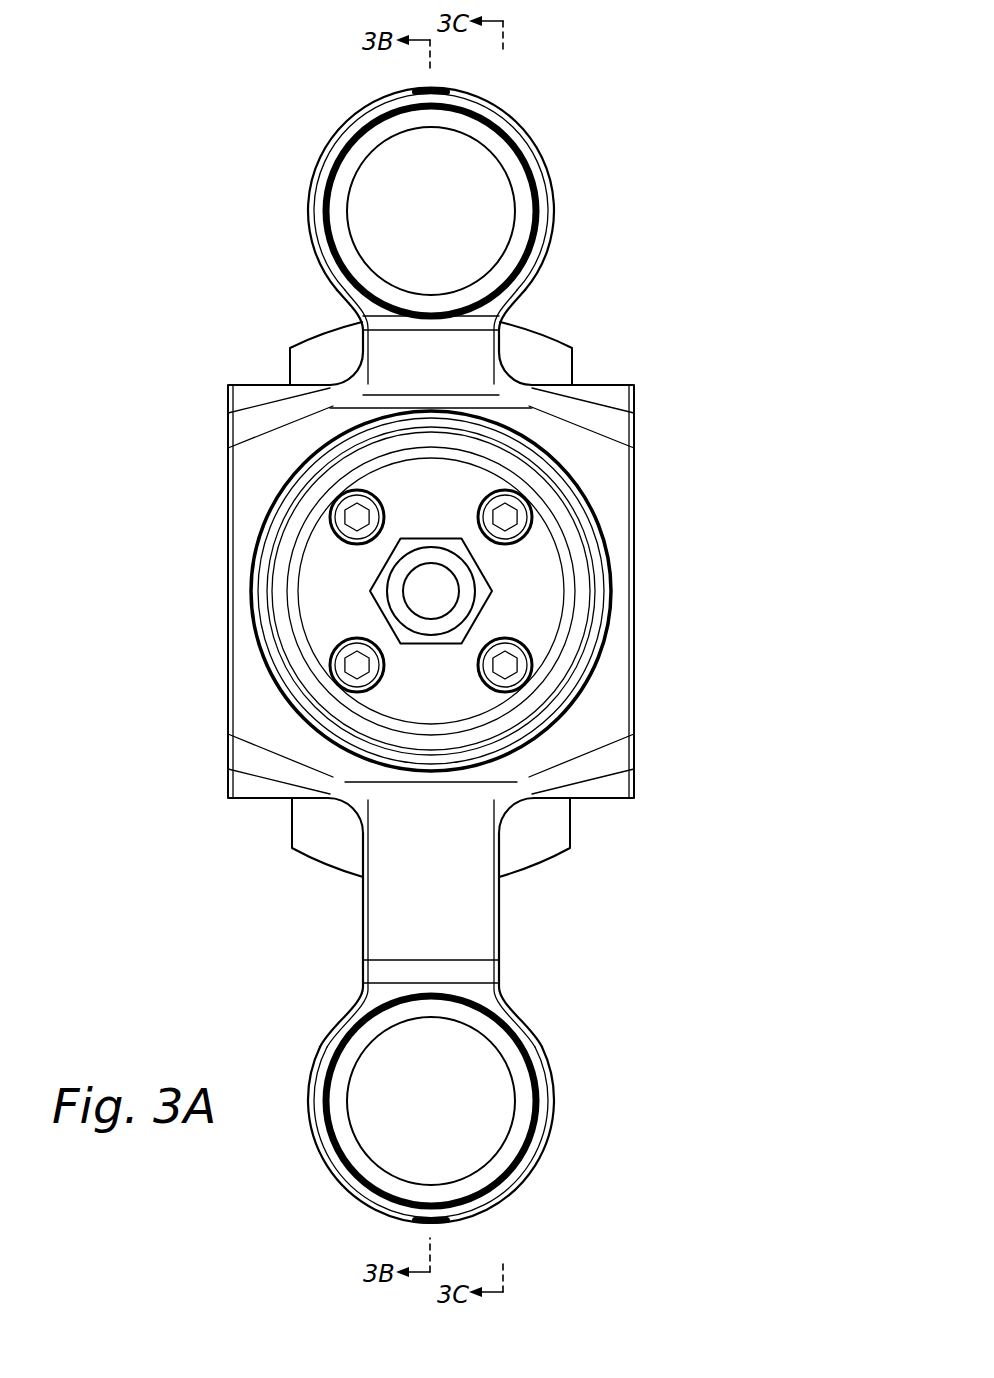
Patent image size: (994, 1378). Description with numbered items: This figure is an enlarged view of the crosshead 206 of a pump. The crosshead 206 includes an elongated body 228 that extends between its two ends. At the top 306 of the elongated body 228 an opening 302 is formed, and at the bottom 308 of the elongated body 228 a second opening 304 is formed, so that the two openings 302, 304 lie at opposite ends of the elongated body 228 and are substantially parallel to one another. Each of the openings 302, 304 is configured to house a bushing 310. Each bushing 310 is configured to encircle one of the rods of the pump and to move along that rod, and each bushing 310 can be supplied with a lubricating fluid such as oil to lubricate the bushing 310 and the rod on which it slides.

The crosshead 206 is at (635, 464).
The elongated body 228 is at (500, 926).
The opening 302 is at (553, 243).
The opening 304 is at (554, 1115).
The top 306 is at (508, 133).
The bottom 308 is at (518, 1173).
The bushing 310 is at (503, 173).